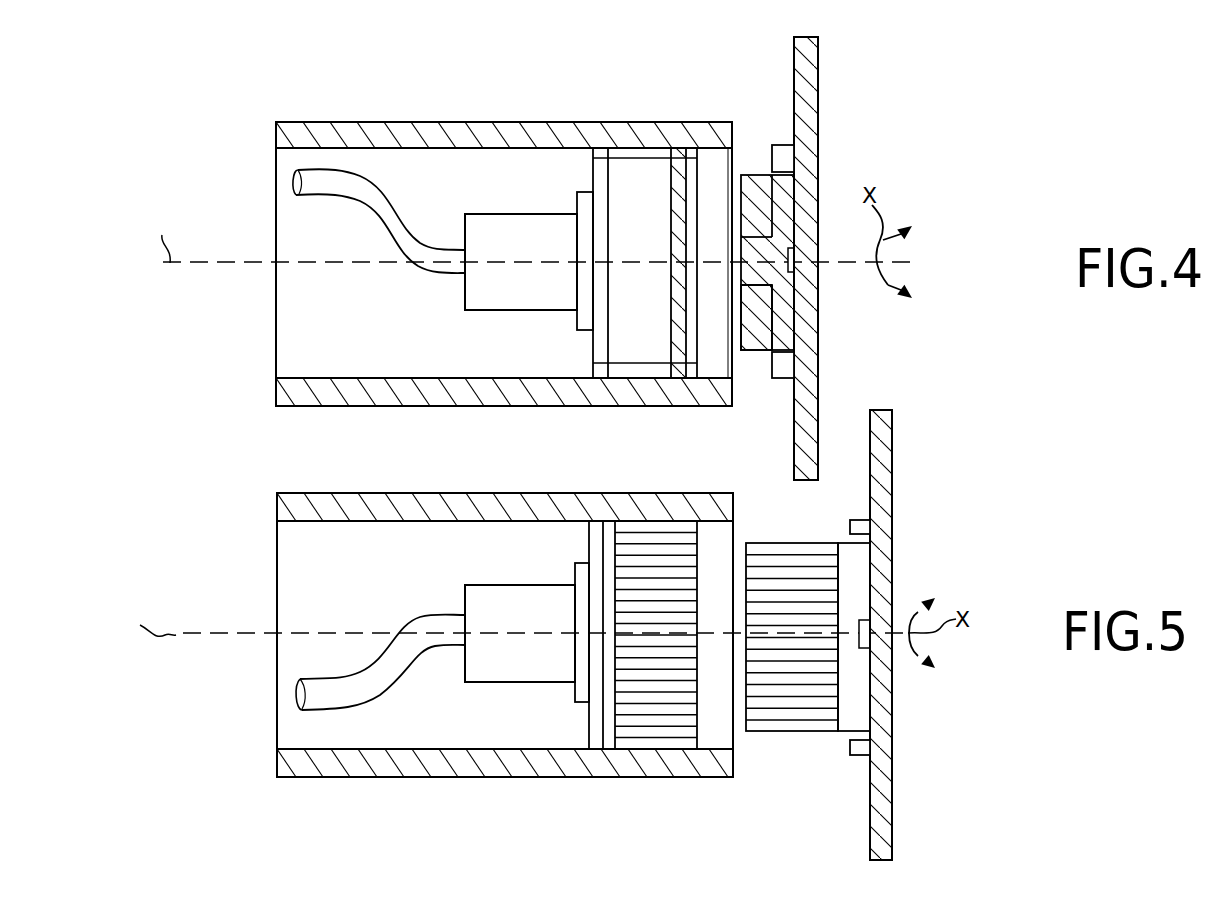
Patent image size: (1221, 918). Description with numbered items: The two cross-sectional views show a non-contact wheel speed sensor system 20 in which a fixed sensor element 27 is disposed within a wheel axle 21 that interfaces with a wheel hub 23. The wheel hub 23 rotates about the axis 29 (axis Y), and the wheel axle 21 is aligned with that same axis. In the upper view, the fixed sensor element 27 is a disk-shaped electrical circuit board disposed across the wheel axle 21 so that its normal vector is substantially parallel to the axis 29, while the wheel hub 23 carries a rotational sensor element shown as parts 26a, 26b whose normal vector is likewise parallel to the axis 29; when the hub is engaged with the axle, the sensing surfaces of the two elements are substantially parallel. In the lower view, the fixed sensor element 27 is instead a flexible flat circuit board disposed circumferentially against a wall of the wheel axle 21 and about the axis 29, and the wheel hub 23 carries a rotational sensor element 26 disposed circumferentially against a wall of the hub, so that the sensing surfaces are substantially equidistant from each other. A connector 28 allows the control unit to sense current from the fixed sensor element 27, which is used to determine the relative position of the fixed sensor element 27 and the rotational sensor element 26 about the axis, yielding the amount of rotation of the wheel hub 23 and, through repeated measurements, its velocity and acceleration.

In FIG. 4, the non-contact wheel speed sensor system 20 is at (424, 267).
In FIG. 5, the non-contact wheel speed sensor system 20 is at (435, 658).
In FIG. 4, the wheel axle 21 is at (225, 375).
In FIG. 5, the wheel axle 21 is at (215, 755).
In FIG. 4, the wheel hub 23 is at (810, 364).
In FIG. 5, the wheel hub 23 is at (886, 808).
In FIG. 5, the rotational sensor element 26 is at (802, 712).
In FIG. 4, the magnet part 26a is at (755, 180).
In FIG. 4, the magnet part 26b is at (767, 317).
In FIG. 4, the fixed sensor element 27 is at (678, 165).
In FIG. 5, the fixed sensor element 27 is at (686, 697).
In FIG. 4, the connector 28 is at (466, 297).
In FIG. 5, the connector 28 is at (483, 670).
In FIG. 4, the axis 29 is at (236, 263).
In FIG. 5, the axis 29 is at (240, 634).